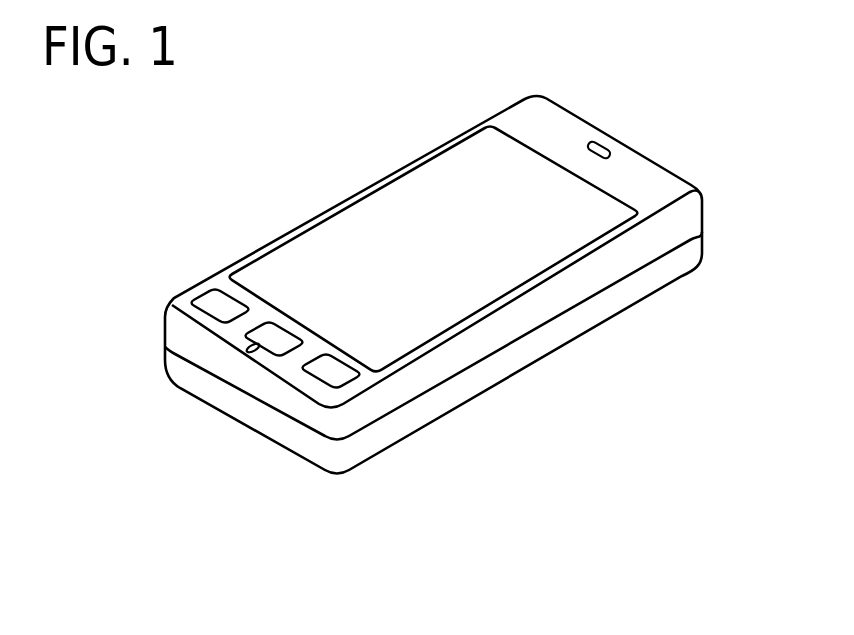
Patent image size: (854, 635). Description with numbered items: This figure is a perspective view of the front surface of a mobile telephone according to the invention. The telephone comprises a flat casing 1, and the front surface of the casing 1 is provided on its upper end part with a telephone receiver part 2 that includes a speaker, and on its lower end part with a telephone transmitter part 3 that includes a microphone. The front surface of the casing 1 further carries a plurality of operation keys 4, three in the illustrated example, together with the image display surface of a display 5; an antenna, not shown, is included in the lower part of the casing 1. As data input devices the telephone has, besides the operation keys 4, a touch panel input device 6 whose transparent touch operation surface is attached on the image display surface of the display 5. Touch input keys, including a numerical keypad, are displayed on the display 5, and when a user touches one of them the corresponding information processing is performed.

The casing 1 is at (658, 177).
The telephone receiver part 2 is at (604, 143).
The telephone transmitter part 3 is at (243, 346).
The operation keys 4 is at (203, 300).
The display 5 is at (383, 203).
The touch panel input device 6 is at (508, 270).